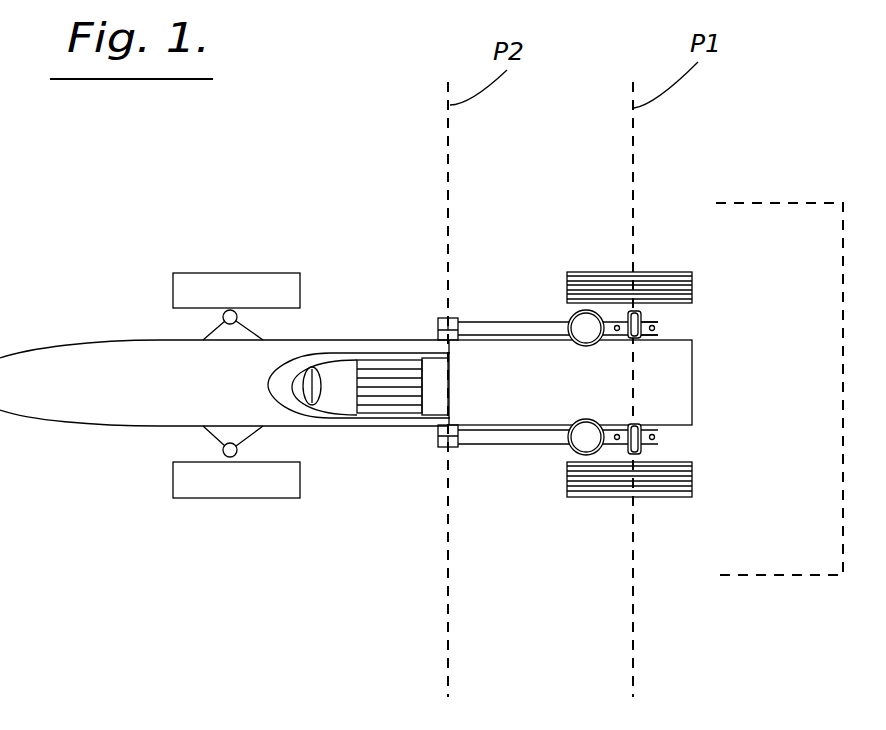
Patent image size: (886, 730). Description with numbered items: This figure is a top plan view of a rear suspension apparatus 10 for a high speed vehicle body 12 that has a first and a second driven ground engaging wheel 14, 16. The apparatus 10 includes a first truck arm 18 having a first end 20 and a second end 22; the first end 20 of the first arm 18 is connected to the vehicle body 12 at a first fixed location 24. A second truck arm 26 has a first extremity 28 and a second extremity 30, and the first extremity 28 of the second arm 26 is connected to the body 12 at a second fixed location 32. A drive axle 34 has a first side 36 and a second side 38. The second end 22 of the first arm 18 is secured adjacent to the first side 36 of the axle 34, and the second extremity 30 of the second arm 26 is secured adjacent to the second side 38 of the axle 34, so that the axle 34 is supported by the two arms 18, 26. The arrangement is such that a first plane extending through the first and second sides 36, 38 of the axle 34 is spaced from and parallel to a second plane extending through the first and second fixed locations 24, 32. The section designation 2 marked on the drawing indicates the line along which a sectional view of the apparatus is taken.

The section line 2- 2 is at (732, 208).
The rear suspension apparatus 10 is at (512, 200).
The high speed vehicle body 12 is at (147, 380).
The first driven ground engaging wheel 14 is at (612, 484).
The second driven ground engaging wheel 16 is at (613, 290).
The first truck arm 18 is at (510, 440).
The first end 20 is at (447, 447).
The second end 22 is at (665, 440).
The first fixed location 24 is at (447, 447).
The second truck arm 26 is at (537, 322).
The first extremity 28 is at (438, 326).
The second extremity 30 is at (657, 328).
The second fixed location 32 is at (453, 318).
The drive axle 34 is at (650, 312).
The first side 36 is at (648, 457).
The second side 38 is at (636, 311).